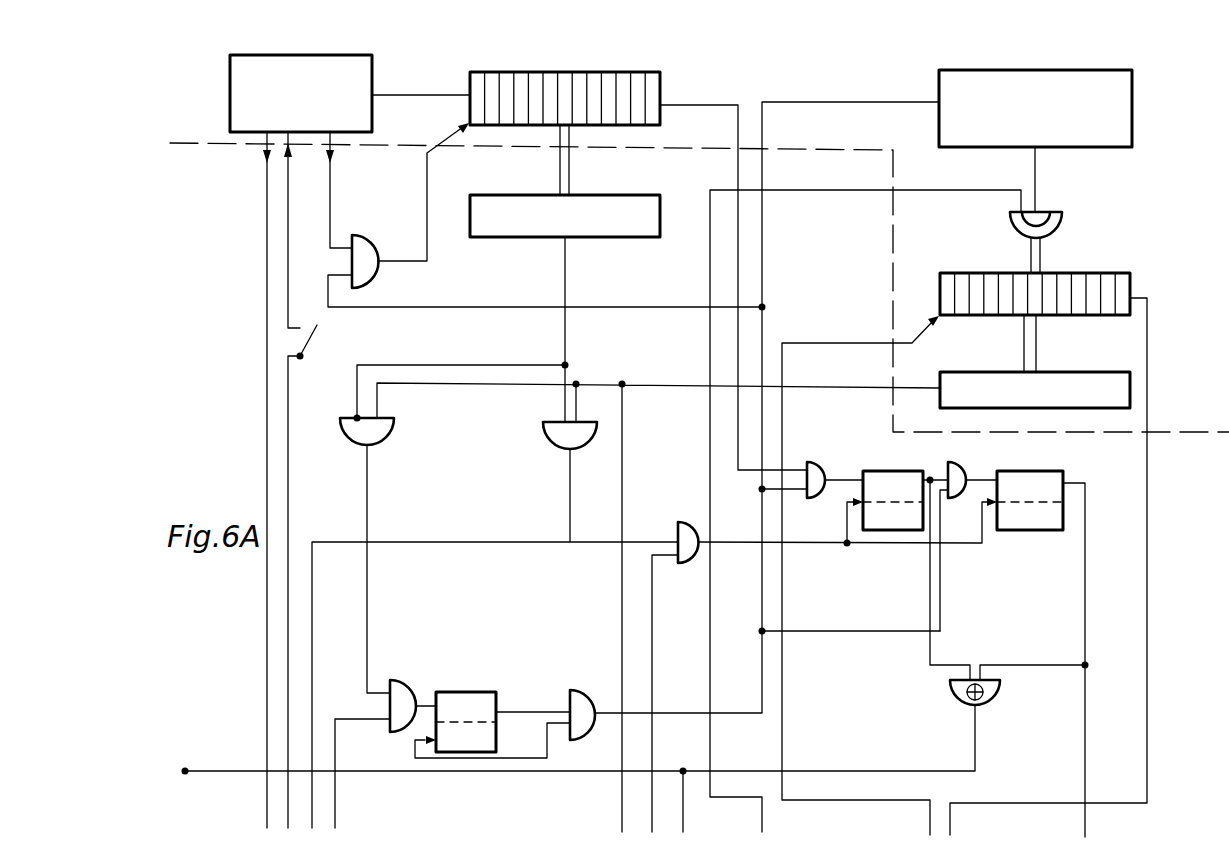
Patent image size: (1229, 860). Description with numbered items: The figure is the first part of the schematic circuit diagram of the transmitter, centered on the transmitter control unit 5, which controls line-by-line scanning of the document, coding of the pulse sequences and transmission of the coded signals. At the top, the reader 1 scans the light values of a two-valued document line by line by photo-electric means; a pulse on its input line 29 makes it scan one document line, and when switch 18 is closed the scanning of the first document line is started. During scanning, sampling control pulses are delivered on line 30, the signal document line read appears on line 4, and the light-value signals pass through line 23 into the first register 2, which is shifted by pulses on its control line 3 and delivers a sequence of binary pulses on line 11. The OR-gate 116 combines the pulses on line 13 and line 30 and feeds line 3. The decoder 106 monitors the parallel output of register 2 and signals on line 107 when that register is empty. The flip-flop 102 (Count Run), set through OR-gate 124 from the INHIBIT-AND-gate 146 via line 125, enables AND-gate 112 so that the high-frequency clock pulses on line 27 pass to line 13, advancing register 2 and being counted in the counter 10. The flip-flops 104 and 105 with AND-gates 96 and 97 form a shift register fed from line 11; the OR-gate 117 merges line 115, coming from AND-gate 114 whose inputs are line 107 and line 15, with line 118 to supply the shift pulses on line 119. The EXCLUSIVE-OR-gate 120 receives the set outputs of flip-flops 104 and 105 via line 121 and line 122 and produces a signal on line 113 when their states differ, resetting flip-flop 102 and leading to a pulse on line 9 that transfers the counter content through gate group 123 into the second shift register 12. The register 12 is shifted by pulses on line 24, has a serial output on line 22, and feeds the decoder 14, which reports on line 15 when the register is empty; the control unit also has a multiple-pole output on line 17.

The reader 1 is at (228, 80).
The first register 2 is at (535, 72).
The line 3 is at (428, 190).
The line 4 is at (267, 185).
The transmitter control unit 5 is at (850, 710).
The line 9 is at (862, 193).
The counter 10 is at (1132, 127).
The line 11 is at (694, 105).
The second shift register 12 is at (1132, 288).
The line 13 is at (835, 102).
The decoder 14 is at (1130, 392).
The line 15 is at (690, 385).
The line 17 is at (289, 514).
The switch 18 is at (306, 352).
The line 22 is at (1149, 373).
The line 23 is at (400, 96).
The line 24 is at (812, 344).
The line 27 is at (199, 771).
The line 29 is at (290, 262).
The line 30 is at (331, 207).
The AND-gate 96 is at (833, 459).
The AND-gate 97 is at (975, 459).
The flip-flop (Count Run) 102 is at (478, 681).
The flip-flop (Color Change Detector) 104 is at (905, 459).
The flip-flop (Color Change Detector) 105 is at (1040, 459).
The decoder 106 is at (518, 238).
The line 107 is at (572, 302).
The AND-gate 112 is at (589, 689).
The line 113 is at (852, 771).
The AND-gate 114 is at (545, 430).
The line 115 is at (452, 541).
The OR-gate 116 is at (380, 249).
The OR-gate 117 is at (689, 525).
The line 118 is at (652, 757).
The line 119 is at (812, 546).
The EXCLUSIVE-OR-gate 120 is at (1002, 688).
The line 121 is at (947, 663).
The line 122 is at (1083, 637).
The gate group 123 is at (1064, 220).
The OR-gate 124 is at (402, 684).
The line 125 is at (368, 626).
The INHIBIT-AND-gate 146 is at (394, 432).